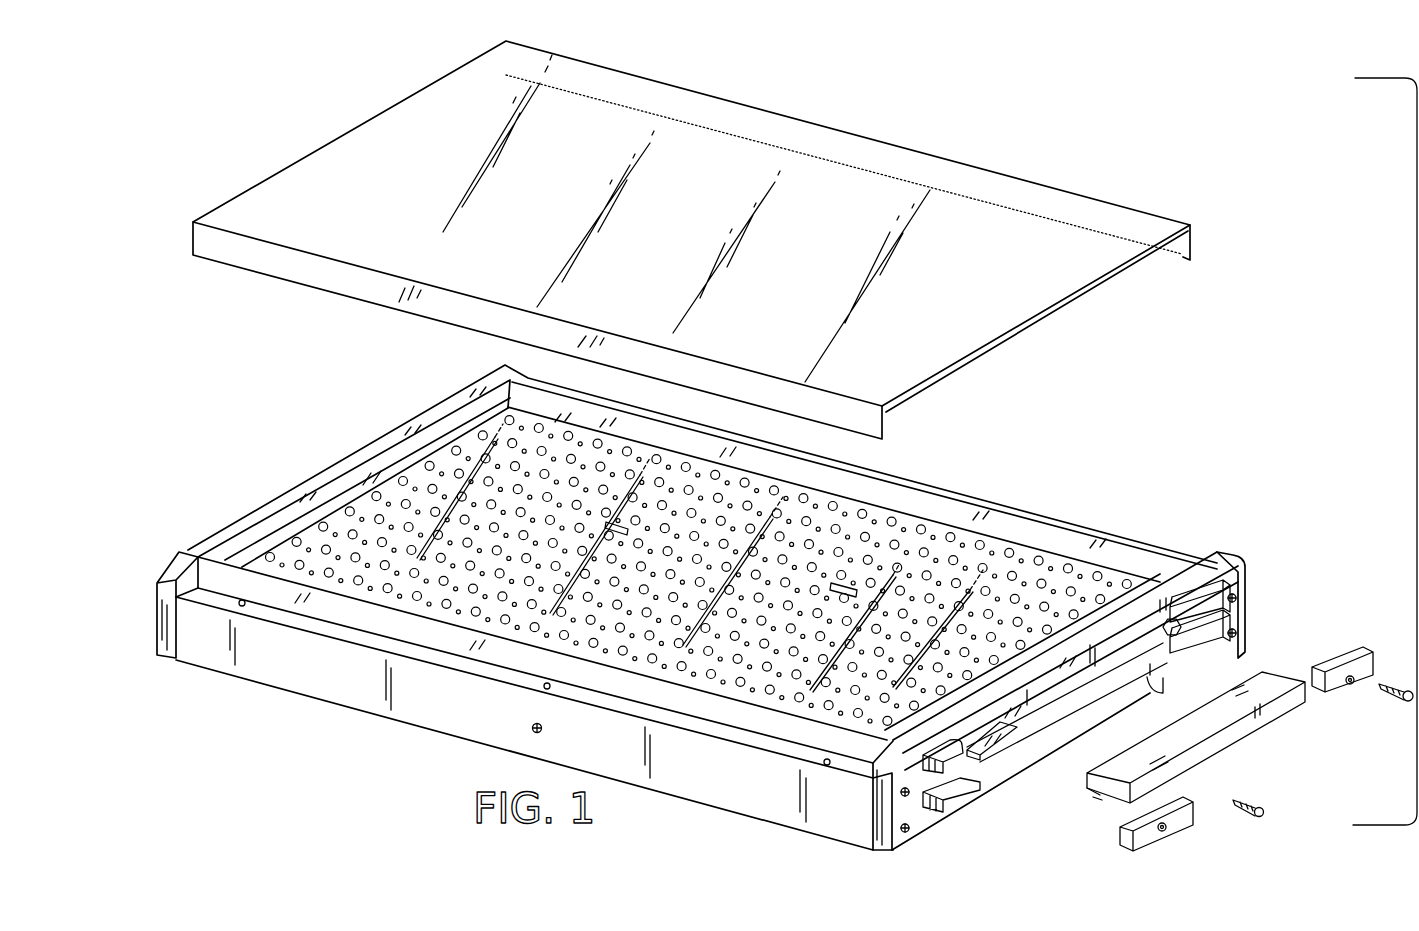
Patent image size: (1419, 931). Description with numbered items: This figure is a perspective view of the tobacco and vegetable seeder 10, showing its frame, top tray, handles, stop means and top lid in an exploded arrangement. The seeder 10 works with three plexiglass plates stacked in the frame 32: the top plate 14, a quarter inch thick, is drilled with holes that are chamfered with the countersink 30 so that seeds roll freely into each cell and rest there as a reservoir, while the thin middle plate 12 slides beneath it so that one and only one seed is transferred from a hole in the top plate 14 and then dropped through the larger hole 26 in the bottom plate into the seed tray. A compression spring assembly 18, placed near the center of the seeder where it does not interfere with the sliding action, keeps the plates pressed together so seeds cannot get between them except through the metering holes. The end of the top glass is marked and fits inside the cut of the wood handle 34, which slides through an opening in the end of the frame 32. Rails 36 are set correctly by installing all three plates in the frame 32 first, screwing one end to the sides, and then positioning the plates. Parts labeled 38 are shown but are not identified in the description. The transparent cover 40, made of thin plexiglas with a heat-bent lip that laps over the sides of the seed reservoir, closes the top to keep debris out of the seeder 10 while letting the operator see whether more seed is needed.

The tobacco and vegetable seeder 10 is at (295, 442).
The middle plate 12 is at (1003, 740).
The top plate 14 is at (910, 523).
The compression spring assembly 18 is at (855, 585).
The larger hole 26 is at (1078, 577).
The countersink 30 is at (955, 535).
The frame 32 is at (692, 768).
The wood handle 34 is at (1240, 730).
The rails 36 is at (1017, 520).
The side rail 38 is at (1233, 580).
The transparent cover 40 is at (1000, 315).